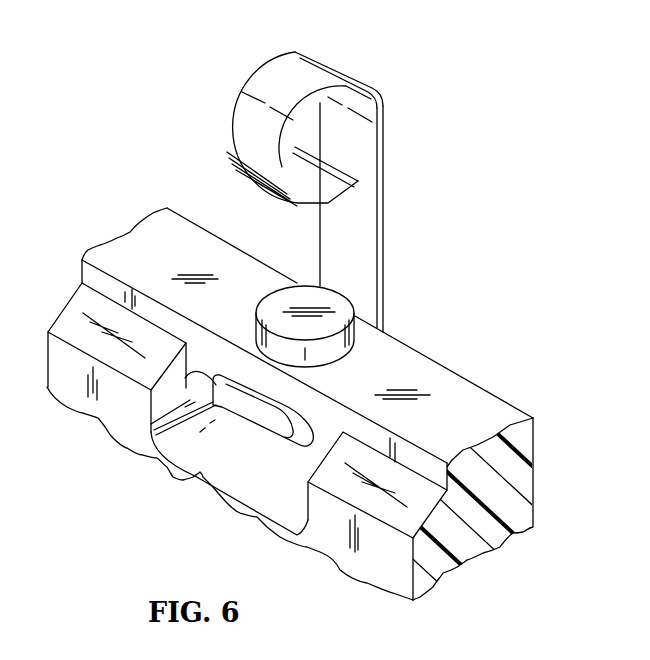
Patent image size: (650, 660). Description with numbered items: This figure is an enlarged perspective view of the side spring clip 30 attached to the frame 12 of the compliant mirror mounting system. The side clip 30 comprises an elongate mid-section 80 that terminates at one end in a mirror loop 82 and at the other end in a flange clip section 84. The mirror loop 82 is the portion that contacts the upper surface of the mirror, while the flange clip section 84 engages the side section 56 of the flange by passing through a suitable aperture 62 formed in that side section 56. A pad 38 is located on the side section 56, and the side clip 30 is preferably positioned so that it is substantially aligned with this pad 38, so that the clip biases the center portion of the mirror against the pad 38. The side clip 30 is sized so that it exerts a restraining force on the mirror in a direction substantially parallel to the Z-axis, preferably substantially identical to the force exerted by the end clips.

The base member 12 is at (323, 411).
The side spring clip 30 is at (312, 192).
The pad 38 is at (308, 285).
The side section 56 is at (203, 226).
The aperture 62 is at (193, 482).
The elongate mid-section 80 is at (386, 278).
The mirror loop 82 is at (228, 100).
The flange clip section 84 is at (258, 420).